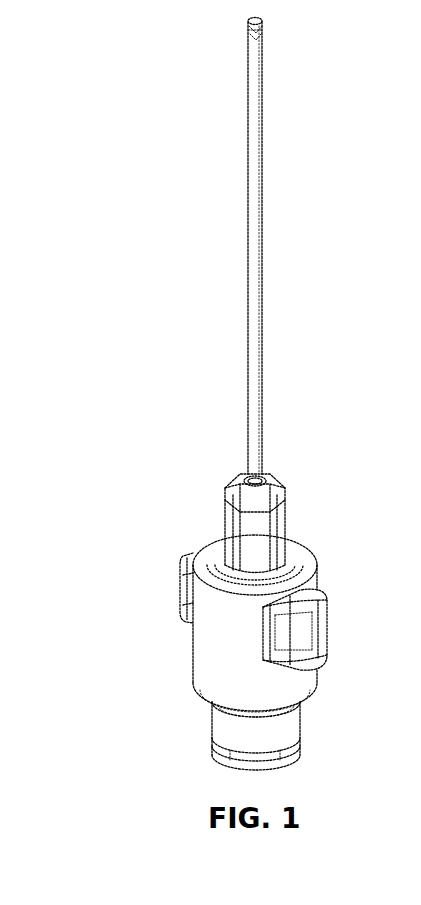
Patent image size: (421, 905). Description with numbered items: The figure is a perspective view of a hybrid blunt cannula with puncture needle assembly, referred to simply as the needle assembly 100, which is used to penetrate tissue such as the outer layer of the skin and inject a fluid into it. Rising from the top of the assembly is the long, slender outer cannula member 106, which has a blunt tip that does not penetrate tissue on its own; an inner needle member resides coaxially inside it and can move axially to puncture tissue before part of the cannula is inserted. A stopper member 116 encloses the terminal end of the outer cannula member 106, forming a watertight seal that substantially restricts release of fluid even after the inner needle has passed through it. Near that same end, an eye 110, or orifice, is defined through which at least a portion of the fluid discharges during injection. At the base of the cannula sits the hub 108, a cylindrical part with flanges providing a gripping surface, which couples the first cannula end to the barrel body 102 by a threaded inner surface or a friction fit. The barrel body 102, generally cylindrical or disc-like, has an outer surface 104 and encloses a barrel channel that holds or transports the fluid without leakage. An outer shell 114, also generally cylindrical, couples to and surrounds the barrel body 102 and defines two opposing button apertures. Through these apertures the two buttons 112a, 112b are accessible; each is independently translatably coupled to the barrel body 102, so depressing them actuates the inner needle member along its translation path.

The needle assembly 100 is at (147, 367).
The barrel body 102 is at (293, 733).
The outer surface 104 is at (228, 738).
The outer cannula member 106 is at (255, 408).
The hub 108 is at (226, 550).
The eye 110 is at (258, 40).
The button 112a is at (312, 635).
The button 112b is at (185, 592).
The outer shell 114 is at (210, 685).
The stopper member 116 is at (262, 20).